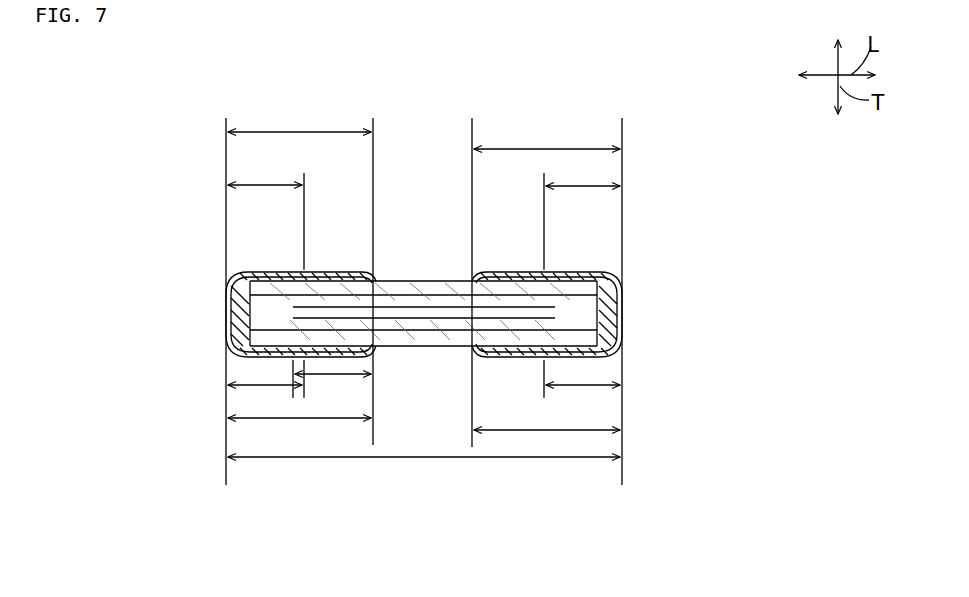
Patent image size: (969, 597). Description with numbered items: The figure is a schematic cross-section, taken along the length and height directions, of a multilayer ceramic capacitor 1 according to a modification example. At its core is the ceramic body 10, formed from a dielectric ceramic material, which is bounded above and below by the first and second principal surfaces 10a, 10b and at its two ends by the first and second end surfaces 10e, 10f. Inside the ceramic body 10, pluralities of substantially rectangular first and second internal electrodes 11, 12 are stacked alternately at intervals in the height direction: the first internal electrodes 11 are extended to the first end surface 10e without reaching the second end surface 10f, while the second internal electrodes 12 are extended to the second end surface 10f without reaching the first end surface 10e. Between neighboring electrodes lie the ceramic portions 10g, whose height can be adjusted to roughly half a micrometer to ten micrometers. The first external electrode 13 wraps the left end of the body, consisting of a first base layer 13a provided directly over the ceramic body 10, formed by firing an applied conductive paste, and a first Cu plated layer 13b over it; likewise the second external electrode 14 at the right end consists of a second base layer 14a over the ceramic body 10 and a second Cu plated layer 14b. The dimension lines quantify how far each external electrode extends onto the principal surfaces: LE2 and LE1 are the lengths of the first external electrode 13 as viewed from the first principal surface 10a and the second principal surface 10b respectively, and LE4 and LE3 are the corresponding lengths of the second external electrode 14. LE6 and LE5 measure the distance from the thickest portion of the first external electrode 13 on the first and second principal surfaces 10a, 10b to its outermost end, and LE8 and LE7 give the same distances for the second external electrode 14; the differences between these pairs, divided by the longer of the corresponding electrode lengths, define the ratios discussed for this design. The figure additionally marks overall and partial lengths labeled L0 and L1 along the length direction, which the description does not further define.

The multilayer ceramic capacitor 1 is at (407, 195).
The ceramic body 10 is at (328, 275).
The first principal surface 10a is at (440, 281).
The second principal surface 10b is at (512, 360).
The first end surface 10e is at (250, 312).
The second end surface 10f is at (597, 312).
The ceramic portions 10g is at (447, 330).
The first internal electrodes 11 is at (392, 281).
The second internal electrodes 12 is at (387, 346).
The first external electrode 13 is at (355, 262).
The first base layer 13a is at (268, 272).
The first Cu plated layer 13b is at (228, 290).
The second external electrode 14 is at (483, 274).
The second base layer 14a is at (510, 272).
The second Cu plated layer 14b is at (616, 277).
The length of the first external electrode viewed from the second principal surface LE1 is at (299, 436).
The length of the first external electrode viewed from the first principal surface LE2 is at (299, 121).
The length of the second external electrode viewed from the second principal surface LE3 is at (547, 448).
The length of the second external electrode viewed from the first principal surface LE4 is at (547, 138).
The distance from thickest portion of first external electrode on second principal s LE5 is at (265, 403).
The distance from thickest portion of first external electrode on first principal su LE6 is at (265, 172).
The distance from thickest portion of second external electrode on second principal LE7 is at (583, 403).
The distance from thickest portion of second external electrode on first principal s LE8 is at (583, 174).
The overall length L0 is at (424, 474).
The length L1 is at (333, 391).